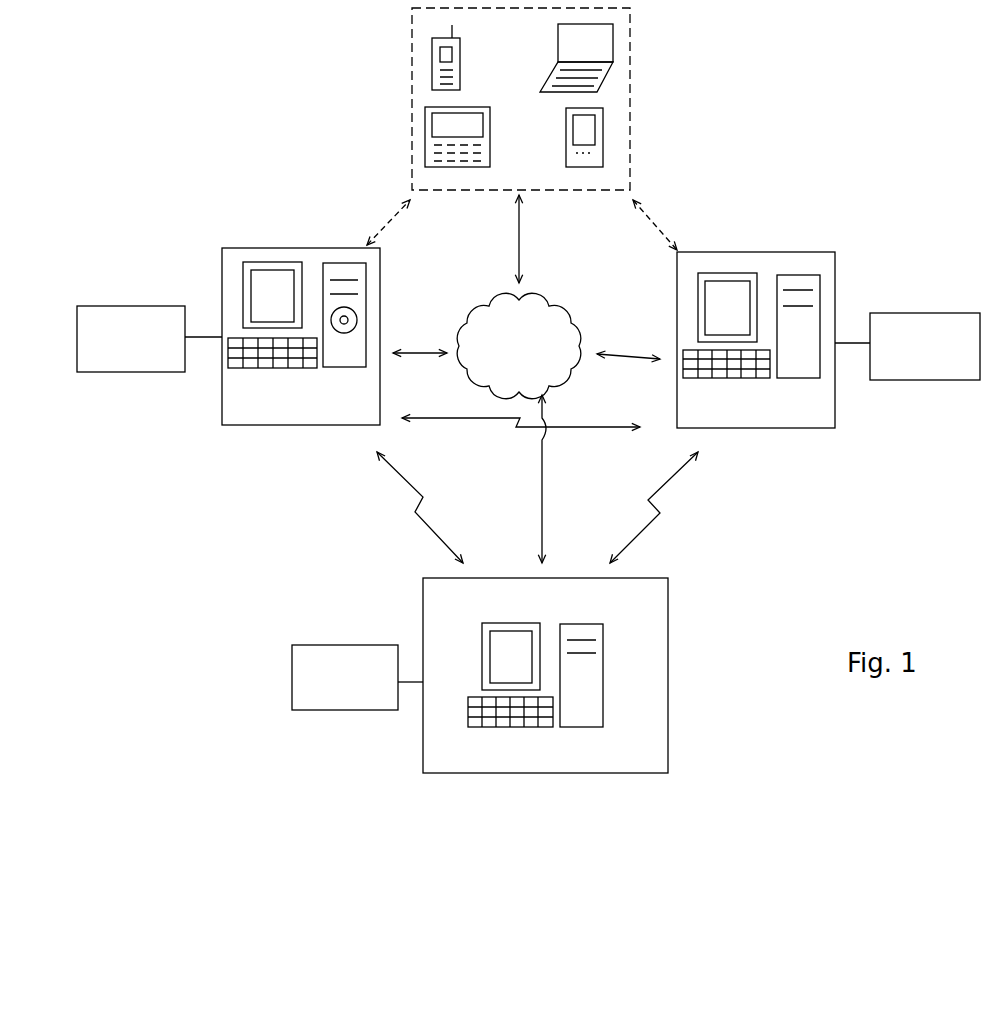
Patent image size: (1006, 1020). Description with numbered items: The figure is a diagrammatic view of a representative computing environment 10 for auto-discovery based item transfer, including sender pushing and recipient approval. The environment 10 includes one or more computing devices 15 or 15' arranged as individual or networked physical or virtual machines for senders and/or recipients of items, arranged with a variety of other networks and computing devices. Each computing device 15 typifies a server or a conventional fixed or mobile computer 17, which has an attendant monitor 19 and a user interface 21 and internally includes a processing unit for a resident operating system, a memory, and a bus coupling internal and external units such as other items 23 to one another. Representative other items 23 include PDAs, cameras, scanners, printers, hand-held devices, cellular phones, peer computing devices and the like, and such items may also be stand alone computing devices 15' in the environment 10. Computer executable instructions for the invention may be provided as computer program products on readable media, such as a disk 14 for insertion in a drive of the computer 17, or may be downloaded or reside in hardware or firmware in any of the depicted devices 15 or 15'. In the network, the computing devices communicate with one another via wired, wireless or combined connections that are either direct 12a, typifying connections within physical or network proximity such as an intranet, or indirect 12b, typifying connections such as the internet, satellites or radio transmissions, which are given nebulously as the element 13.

The computing environment 10 is at (108, 125).
The direct connection 12a is at (383, 225).
The indirect connection 12b is at (520, 242).
The indirect connection element 13 is at (568, 312).
The disk 14 is at (358, 310).
The computing device 15 is at (528, 491).
The stand alone computing device 15' is at (548, 99).
The computer 17 is at (345, 367).
The monitor 19 is at (243, 286).
The user interface 21 is at (250, 368).
The other items 23 is at (125, 306).